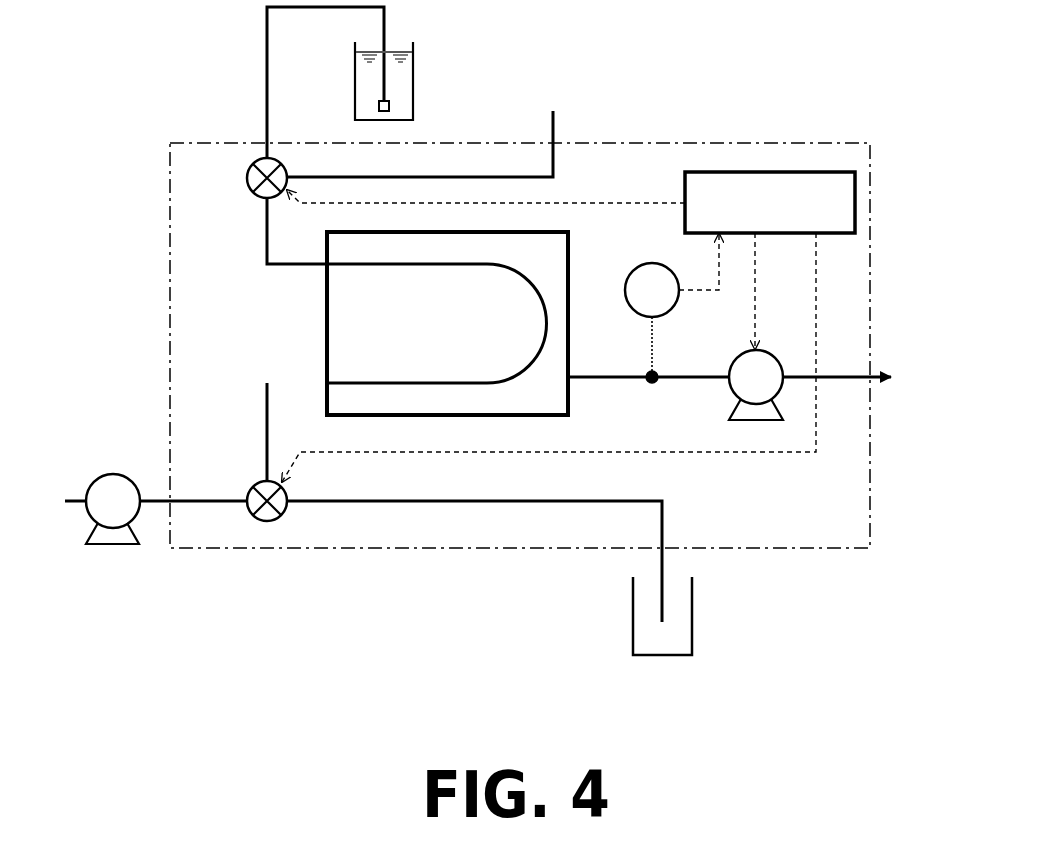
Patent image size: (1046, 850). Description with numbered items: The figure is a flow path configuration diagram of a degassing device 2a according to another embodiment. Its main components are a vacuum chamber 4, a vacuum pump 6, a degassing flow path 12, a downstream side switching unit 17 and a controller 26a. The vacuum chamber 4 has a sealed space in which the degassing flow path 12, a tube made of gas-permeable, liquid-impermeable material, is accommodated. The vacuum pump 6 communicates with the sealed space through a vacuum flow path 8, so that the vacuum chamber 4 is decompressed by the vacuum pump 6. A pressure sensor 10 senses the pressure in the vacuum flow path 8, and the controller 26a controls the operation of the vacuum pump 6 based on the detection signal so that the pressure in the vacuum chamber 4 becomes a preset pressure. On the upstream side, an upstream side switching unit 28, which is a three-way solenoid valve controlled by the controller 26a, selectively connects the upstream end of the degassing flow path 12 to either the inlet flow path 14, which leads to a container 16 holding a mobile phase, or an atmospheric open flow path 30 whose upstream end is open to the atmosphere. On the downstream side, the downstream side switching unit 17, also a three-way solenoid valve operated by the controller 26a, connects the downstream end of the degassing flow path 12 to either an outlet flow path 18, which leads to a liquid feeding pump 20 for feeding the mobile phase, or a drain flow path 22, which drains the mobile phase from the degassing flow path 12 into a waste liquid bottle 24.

The degassing device 2a is at (832, 143).
The vacuum chamber 4 is at (325, 323).
The vacuum pump 6 is at (768, 355).
The vacuum flow path 8 is at (609, 380).
The pressure sensor 10 is at (640, 262).
The degassing flow path 12 is at (394, 380).
The inlet flow path 14 is at (266, 108).
The container 16 is at (413, 80).
The downstream side switching unit 17 is at (256, 485).
The outlet flow path 18 is at (216, 498).
The liquid feeding pump 20 is at (105, 475).
The drain flow path 22 is at (664, 522).
The waste liquid bottle 24 is at (693, 616).
The controller 26a is at (856, 189).
The upstream side switching unit 28 is at (250, 178).
The atmospheric open flow path 30 is at (447, 176).